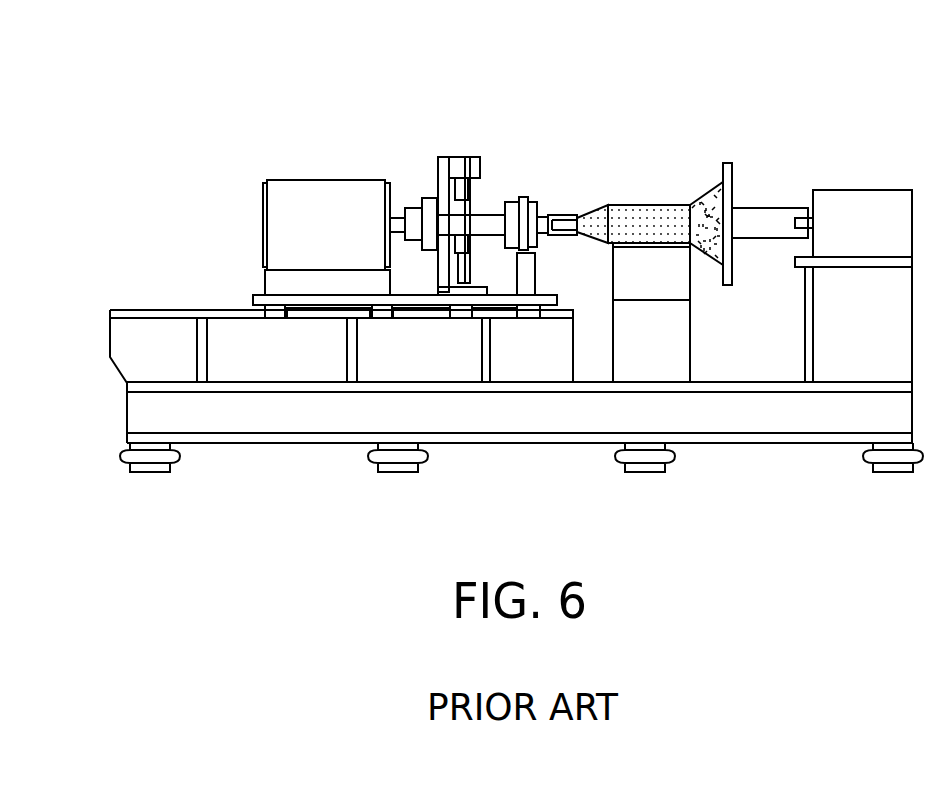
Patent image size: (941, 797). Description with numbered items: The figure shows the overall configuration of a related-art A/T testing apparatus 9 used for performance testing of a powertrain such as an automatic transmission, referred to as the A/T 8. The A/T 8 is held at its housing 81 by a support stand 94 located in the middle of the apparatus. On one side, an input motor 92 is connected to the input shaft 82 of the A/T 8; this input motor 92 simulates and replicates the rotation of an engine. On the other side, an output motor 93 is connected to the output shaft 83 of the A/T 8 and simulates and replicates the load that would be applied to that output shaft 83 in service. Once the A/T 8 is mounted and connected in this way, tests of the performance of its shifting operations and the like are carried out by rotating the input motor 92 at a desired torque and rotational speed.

The A/T testing apparatus 9 is at (398, 125).
The A/T 8 is at (679, 169).
The housing 81 is at (667, 213).
The input shaft 82 is at (735, 213).
The output shaft 83 is at (560, 217).
The input motor 92 is at (868, 217).
The output motor 93 is at (303, 217).
The support stand 94 is at (660, 350).